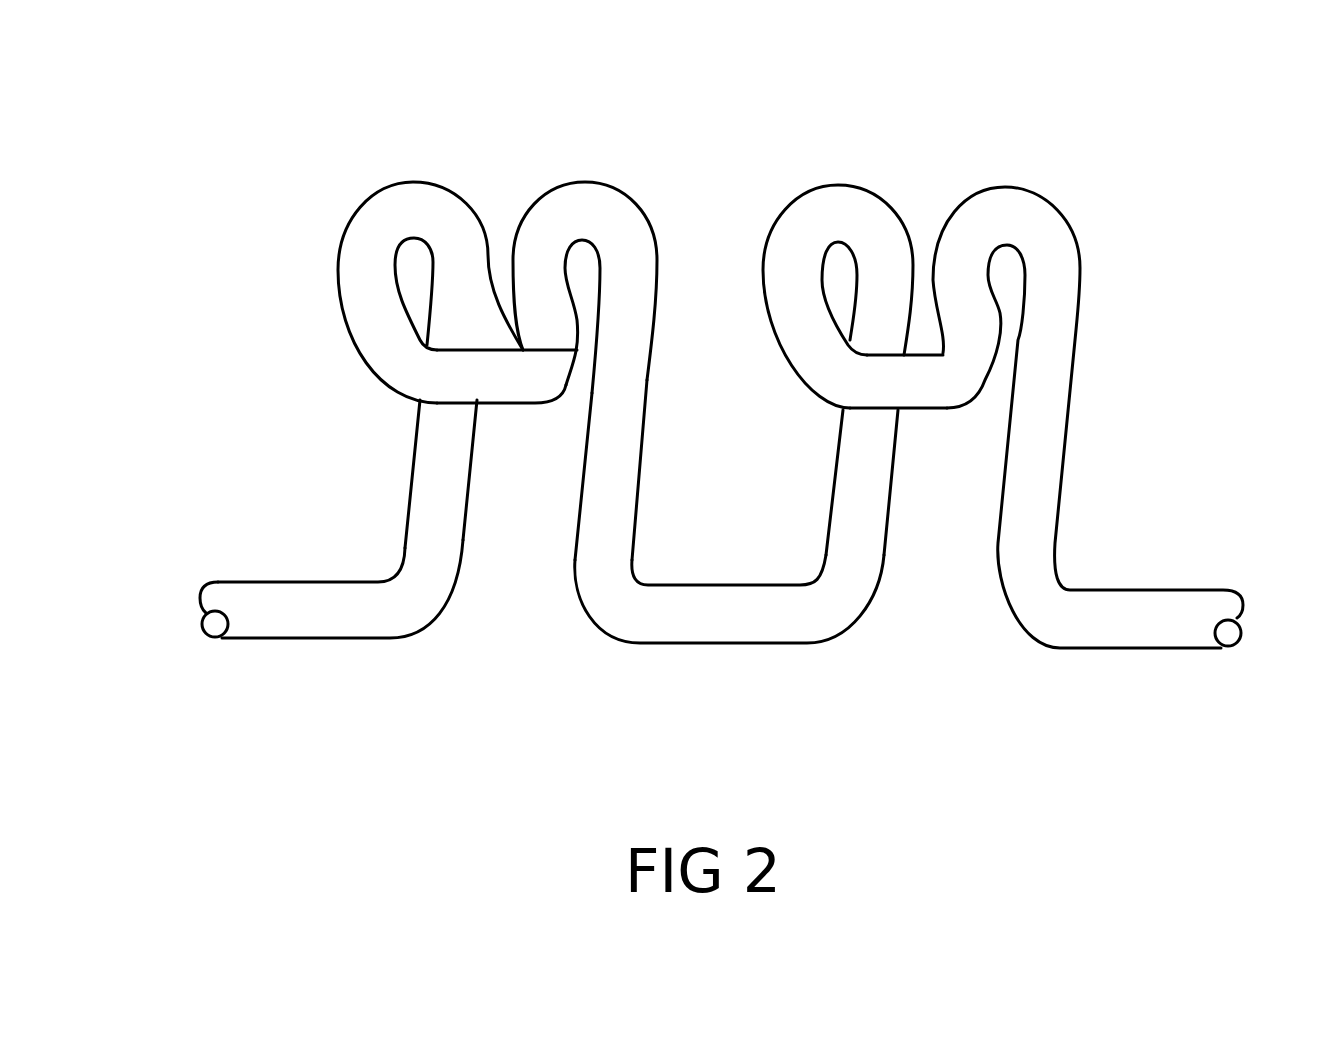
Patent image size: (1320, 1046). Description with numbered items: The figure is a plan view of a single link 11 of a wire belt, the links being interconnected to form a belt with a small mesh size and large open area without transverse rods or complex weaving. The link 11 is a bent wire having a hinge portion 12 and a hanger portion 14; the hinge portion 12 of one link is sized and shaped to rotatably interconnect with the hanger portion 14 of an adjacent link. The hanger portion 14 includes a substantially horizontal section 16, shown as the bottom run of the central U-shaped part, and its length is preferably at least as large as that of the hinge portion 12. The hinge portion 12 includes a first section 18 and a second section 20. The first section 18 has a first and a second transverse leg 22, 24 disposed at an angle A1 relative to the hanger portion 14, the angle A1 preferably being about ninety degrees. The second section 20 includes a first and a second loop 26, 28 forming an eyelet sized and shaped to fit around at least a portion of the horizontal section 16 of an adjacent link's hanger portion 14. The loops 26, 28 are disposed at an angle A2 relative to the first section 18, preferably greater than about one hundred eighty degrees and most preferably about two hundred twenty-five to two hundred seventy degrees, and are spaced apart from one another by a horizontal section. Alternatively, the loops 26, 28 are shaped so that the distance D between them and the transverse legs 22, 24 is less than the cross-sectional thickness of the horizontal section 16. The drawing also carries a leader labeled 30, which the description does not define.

The link 11 is at (702, 433).
The hinge portion 12 is at (382, 367).
The hanger portion 14 is at (729, 575).
The substantially horizontal section 16 is at (562, 657).
The first section 18 is at (473, 455).
The second section 20 is at (462, 342).
The first transverse leg 22 is at (463, 533).
The second transverse leg 24 is at (642, 468).
The first loop 26 is at (765, 233).
The second loop 28 is at (1093, 288).
The third leg 30 is at (922, 425).
The angle A1 is at (413, 427).
The angle A2 is at (988, 277).
The distance D is at (525, 353).